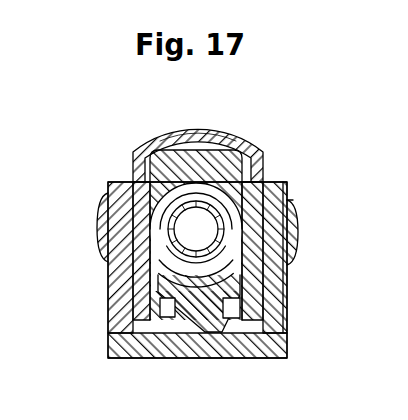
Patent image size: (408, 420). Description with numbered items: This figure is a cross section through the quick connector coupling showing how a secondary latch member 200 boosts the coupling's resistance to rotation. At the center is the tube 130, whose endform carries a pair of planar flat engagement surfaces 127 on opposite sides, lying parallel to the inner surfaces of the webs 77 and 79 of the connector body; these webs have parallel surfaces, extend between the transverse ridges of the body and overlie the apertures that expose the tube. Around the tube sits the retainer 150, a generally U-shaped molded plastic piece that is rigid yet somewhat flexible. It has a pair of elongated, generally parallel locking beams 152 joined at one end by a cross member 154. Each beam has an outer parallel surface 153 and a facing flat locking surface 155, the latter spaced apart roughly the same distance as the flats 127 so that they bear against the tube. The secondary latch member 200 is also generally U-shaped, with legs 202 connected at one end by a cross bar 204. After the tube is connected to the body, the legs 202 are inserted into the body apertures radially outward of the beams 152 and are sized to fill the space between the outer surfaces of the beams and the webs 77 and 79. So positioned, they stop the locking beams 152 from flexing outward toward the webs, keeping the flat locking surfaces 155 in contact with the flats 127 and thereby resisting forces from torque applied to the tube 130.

The web 77 is at (104, 226).
The web 79 is at (298, 250).
The planar flat engagement surface 127 is at (71, 223).
The tube 130 is at (211, 222).
The retainer 150 is at (196, 197).
The locking beam 152 is at (140, 150).
The outer parallel surface 153 is at (134, 172).
The cross member 154 is at (192, 130).
The flat locking surface 155 is at (224, 232).
The secondary latch member 200 is at (190, 295).
The leg 202 is at (118, 293).
The cross bar 204 is at (210, 350).